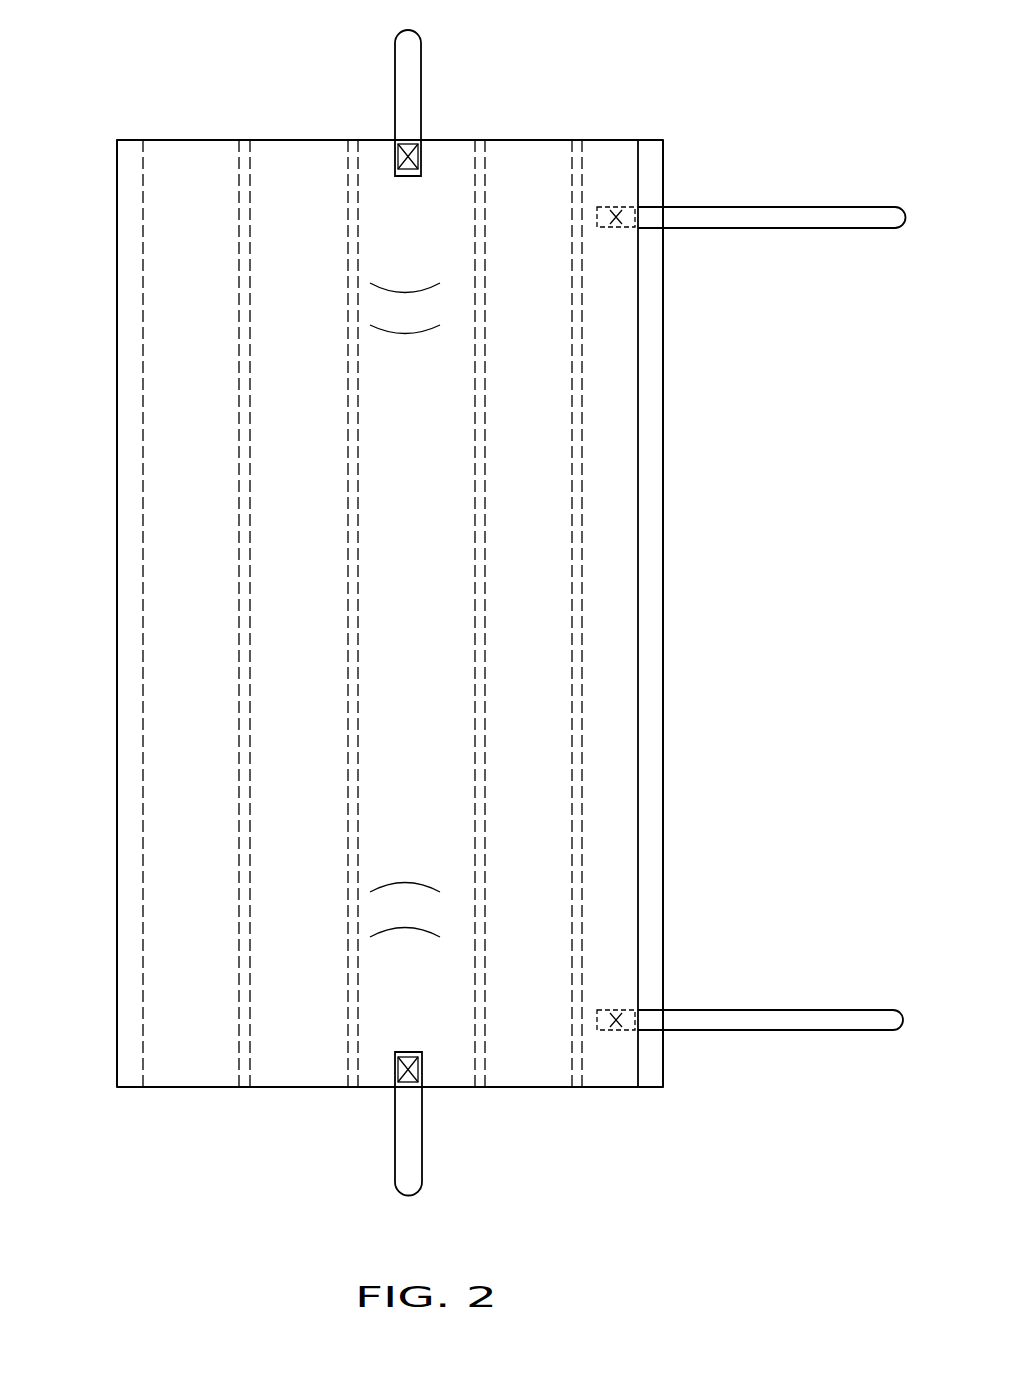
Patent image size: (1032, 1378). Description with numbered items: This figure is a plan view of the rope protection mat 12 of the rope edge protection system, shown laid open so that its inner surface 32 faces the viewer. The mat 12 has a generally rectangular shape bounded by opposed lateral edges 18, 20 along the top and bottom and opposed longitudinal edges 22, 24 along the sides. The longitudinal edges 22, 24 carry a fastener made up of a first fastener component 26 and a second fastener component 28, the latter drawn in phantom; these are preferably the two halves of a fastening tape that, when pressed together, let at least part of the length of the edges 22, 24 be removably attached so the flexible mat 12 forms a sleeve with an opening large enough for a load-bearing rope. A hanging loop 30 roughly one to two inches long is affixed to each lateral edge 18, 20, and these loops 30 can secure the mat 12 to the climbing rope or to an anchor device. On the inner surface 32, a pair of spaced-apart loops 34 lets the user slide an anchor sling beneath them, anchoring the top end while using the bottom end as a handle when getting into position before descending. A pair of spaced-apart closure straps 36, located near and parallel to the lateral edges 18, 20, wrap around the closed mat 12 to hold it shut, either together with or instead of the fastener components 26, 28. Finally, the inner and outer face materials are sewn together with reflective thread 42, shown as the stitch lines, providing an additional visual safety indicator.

The rope protection mat 12 is at (631, 118).
The lateral edge 18 is at (507, 138).
The lateral edge 20 is at (498, 1088).
The longitudinal edge 22 is at (663, 592).
The longitudinal edge 24 is at (117, 607).
The first fastener component 26 is at (652, 640).
The second fastener component 28 is at (130, 677).
The hanging loop 30 is at (413, 53).
The inner surface 32 is at (620, 433).
The loop 34 is at (412, 316).
The closure strap 36 is at (765, 222).
The reflective thread 42 is at (250, 614).